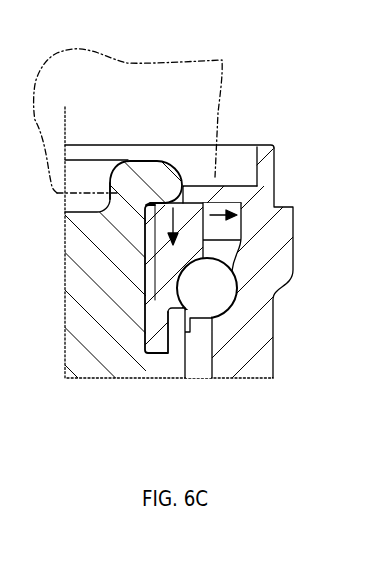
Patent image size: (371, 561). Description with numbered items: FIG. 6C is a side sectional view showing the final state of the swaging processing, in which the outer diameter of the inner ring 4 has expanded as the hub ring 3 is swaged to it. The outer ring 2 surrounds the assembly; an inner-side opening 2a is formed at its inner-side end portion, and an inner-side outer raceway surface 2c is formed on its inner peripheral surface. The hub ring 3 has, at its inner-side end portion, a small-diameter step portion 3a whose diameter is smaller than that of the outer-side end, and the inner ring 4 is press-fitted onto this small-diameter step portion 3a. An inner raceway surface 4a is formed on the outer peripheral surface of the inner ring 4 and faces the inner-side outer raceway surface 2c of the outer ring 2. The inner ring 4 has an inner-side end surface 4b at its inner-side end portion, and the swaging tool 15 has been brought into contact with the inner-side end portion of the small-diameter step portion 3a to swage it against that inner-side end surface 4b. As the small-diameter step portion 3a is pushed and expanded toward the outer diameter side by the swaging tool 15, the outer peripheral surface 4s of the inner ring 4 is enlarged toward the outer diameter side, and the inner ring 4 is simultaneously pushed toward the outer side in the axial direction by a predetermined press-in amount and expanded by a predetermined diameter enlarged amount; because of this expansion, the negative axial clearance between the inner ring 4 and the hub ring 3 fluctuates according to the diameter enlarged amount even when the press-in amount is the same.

The outer ring 2 is at (260, 358).
The inner-side opening 2a is at (253, 163).
The inner-side outer raceway surface 2c is at (195, 322).
The hub ring 3 is at (77, 248).
The small-diameter step portion 3a is at (163, 202).
The inner ring 4 is at (147, 292).
The inner raceway surface 4a is at (215, 287).
The inner-side end surface 4b is at (192, 186).
The outer peripheral surface 4s is at (213, 232).
The swaging tool 15 is at (222, 79).